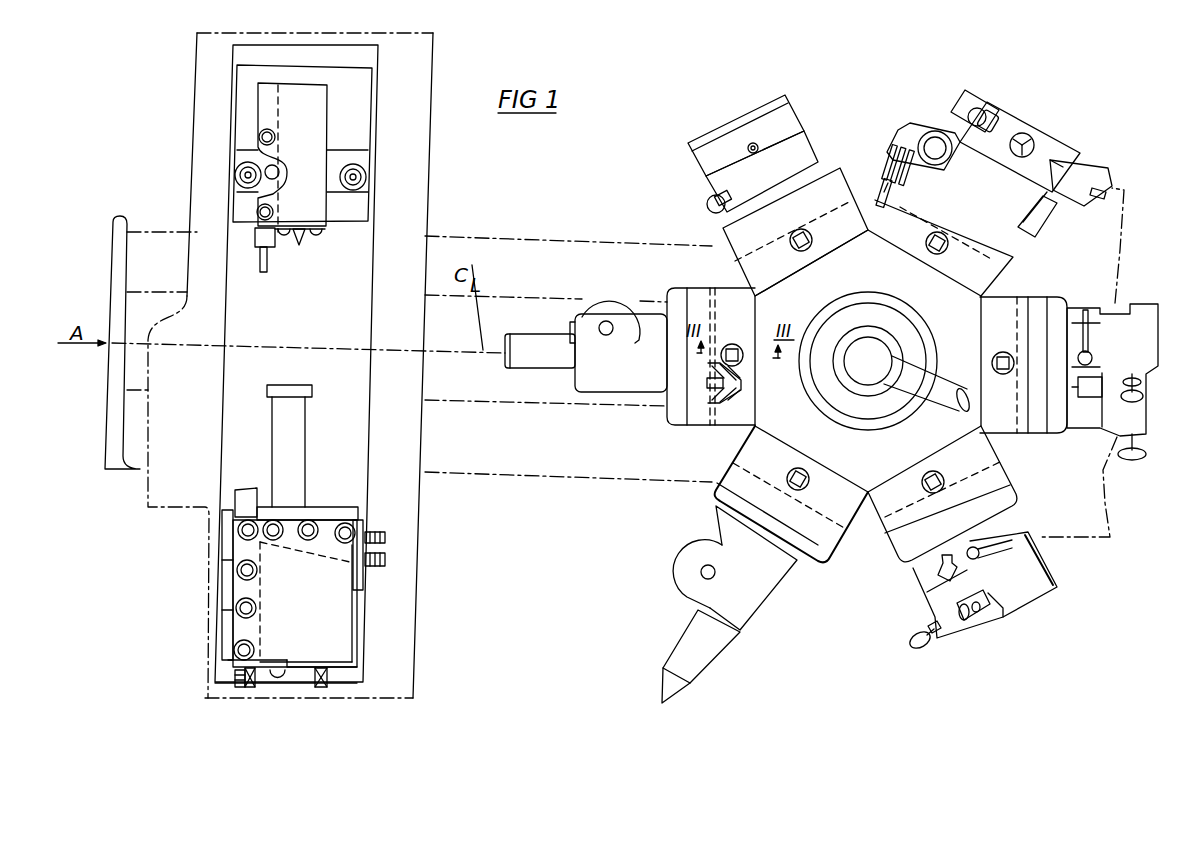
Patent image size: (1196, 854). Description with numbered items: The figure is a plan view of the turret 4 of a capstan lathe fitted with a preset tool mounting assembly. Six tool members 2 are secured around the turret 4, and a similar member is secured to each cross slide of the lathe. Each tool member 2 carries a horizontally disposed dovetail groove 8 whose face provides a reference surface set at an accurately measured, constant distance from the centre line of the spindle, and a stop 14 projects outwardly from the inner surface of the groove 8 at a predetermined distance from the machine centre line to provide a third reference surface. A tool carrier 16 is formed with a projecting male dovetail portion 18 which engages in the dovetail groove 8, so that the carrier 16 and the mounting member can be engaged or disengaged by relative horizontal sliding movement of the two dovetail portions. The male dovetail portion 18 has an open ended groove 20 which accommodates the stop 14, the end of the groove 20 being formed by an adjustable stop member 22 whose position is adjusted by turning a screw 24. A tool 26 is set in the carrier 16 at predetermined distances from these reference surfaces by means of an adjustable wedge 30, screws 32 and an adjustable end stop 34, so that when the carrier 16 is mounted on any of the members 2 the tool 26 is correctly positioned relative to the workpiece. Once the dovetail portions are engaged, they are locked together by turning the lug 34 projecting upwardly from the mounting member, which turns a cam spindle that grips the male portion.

The tool member 2 is at (345, 112).
The turret 4 is at (868, 361).
The dovetail groove 8 is at (342, 162).
The stop 14 is at (270, 178).
The tool carrier 16 is at (1052, 262).
The male dovetail portion 18 is at (1037, 425).
The open ended groove 20 is at (709, 396).
The adjustable stop member 22 is at (716, 362).
The screw 24 is at (713, 300).
The tool 26 is at (266, 267).
The adjustable wedge 30 is at (338, 547).
The screws 32 is at (310, 527).
The adjustable end stop 34 is at (330, 679).